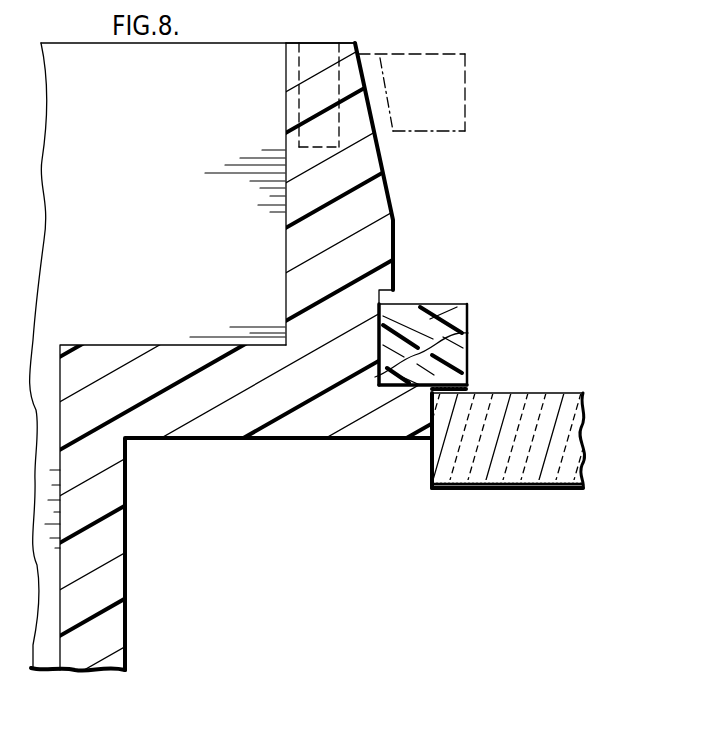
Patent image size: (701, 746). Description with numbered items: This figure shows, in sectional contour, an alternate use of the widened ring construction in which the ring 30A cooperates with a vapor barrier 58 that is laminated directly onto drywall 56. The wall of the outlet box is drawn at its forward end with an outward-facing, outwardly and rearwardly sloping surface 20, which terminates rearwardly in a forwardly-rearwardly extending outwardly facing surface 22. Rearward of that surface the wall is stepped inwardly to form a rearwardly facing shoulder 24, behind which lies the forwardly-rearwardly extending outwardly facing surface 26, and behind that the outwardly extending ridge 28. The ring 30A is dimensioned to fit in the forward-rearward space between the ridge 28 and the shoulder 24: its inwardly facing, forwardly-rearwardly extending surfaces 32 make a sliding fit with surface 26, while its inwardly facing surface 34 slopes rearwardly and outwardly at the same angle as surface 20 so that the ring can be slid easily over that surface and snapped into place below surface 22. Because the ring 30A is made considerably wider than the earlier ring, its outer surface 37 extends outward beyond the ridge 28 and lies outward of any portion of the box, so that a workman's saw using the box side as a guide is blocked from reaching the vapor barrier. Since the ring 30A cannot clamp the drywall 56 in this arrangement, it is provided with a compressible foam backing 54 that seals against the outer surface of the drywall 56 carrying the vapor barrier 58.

The outwardly and rearwardly sloping surface 20 is at (354, 44).
The outwardly facing surface 22 is at (394, 229).
The rearwardly facing shoulder 24 is at (397, 305).
The outwardly facing surface 26 is at (468, 333).
The outwardly extending ridge 28 is at (375, 428).
The ring 30A is at (470, 90).
The inwardly facing surface 32 is at (387, 62).
The inwardly facing surface 34 is at (375, 390).
The outer surface 37 is at (466, 63).
The compressible foam backing 54 is at (470, 390).
The drywall 56 is at (572, 399).
The vapor barrier 58 is at (535, 489).